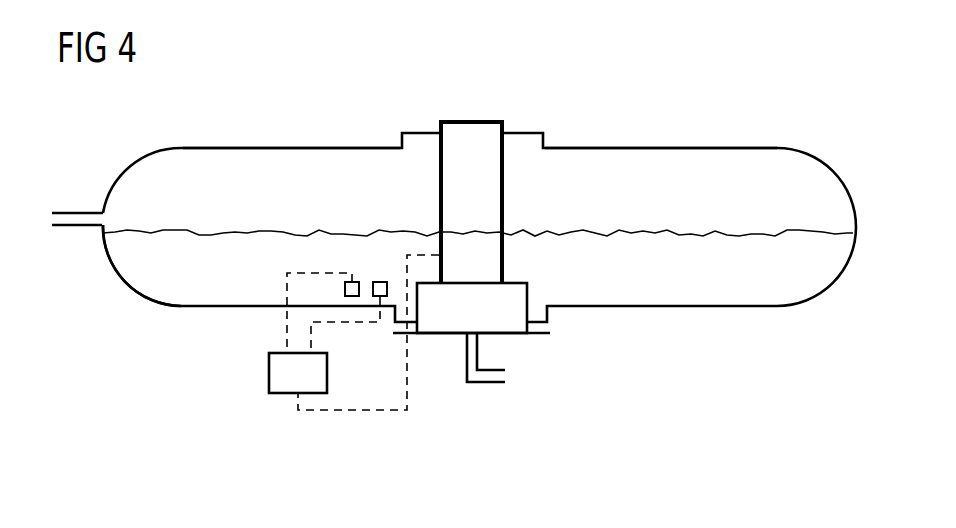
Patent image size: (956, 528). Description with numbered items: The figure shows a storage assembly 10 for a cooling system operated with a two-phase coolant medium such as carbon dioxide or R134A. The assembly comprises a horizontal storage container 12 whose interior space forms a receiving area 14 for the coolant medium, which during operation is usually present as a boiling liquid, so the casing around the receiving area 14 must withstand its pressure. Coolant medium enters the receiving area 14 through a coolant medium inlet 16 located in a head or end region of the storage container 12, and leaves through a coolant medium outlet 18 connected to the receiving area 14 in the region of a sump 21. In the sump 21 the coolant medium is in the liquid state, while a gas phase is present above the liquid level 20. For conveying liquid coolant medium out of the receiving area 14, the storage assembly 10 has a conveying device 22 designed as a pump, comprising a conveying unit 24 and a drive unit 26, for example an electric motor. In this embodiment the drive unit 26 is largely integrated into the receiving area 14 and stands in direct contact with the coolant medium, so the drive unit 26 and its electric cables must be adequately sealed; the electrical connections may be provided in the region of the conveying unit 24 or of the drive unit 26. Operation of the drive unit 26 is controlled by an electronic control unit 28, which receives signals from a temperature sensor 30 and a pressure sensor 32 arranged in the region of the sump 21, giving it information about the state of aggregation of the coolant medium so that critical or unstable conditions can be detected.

The storage assembly 10 is at (742, 121).
The storage container 12 is at (265, 148).
The receiving area 14 is at (200, 157).
The coolant medium inlet 16 is at (78, 218).
The coolant medium outlet 18 is at (490, 378).
The liquid level 20 is at (690, 233).
The sump 21 is at (176, 294).
The conveying device 22 is at (565, 165).
The conveying unit 24 is at (470, 296).
The drive unit 26 is at (471, 131).
The electronic control unit 28 is at (269, 372).
The temperature sensor 30 is at (351, 282).
The pressure sensor 32 is at (381, 282).